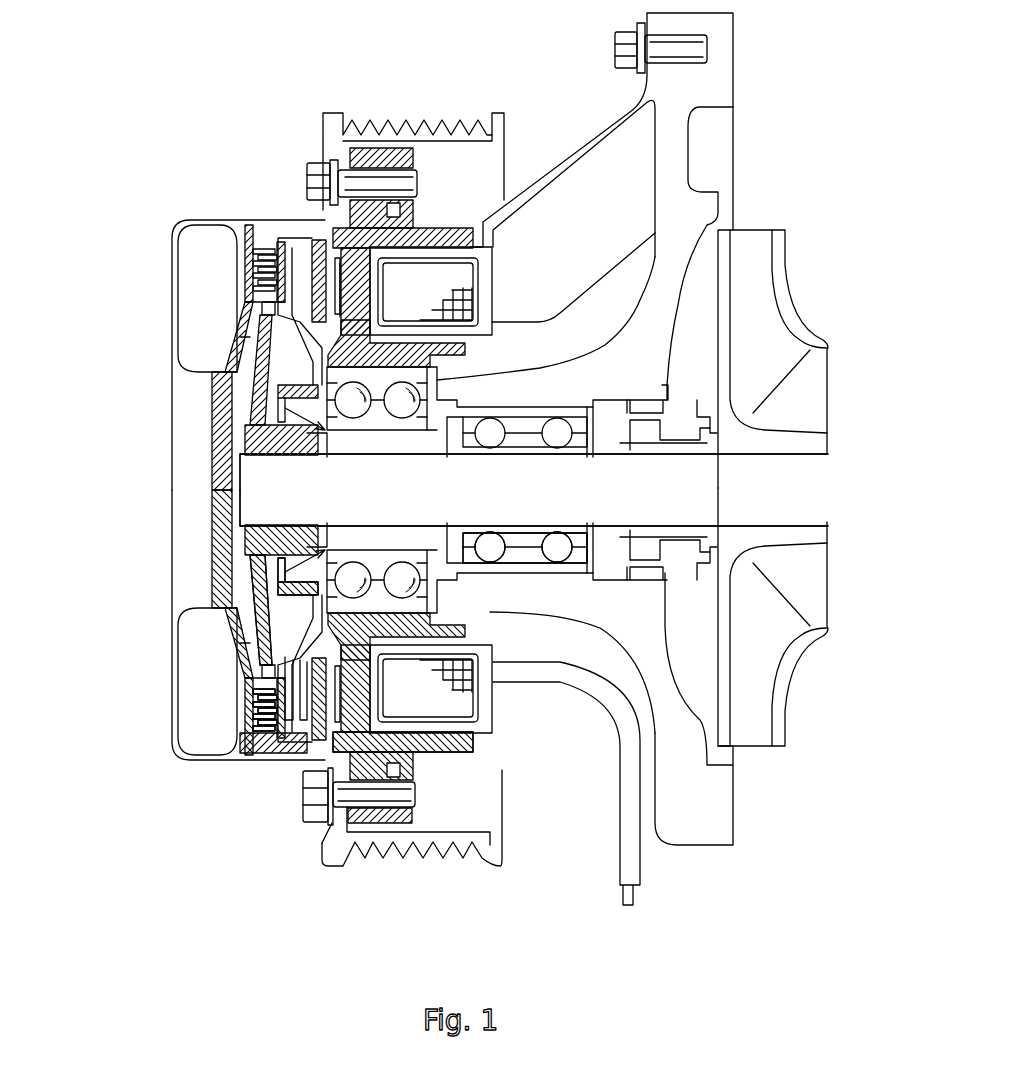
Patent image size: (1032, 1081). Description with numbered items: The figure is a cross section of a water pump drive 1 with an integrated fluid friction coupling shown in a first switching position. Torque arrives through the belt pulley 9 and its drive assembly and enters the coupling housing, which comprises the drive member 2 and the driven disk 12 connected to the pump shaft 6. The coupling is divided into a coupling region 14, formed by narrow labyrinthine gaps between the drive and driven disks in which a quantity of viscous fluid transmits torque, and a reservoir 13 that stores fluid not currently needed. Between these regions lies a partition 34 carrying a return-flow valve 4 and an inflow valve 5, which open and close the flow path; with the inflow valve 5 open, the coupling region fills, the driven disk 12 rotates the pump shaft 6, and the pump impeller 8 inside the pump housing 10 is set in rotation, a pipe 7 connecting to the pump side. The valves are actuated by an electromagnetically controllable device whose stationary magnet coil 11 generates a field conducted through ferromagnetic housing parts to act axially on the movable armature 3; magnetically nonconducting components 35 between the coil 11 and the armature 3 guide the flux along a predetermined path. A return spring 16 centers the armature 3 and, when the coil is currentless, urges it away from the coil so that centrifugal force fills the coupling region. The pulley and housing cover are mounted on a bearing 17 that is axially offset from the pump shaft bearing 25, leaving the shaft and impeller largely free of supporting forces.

The electromagnetic coil 1 is at (395, 258).
The drive member 2 is at (213, 418).
The armature 3 is at (262, 297).
The return-flow valve 4 is at (262, 252).
The inflow valve 5 is at (237, 740).
The pump shaft 6 is at (745, 502).
The water pipe 7 is at (630, 877).
The pump impeller 8 is at (745, 317).
The belt pulley 9 is at (338, 133).
The pump housing 10 is at (690, 108).
The magnet coil 11 is at (410, 700).
The driven disk 12 is at (283, 590).
The reservoir 13 is at (283, 627).
The coupling region 14 is at (253, 690).
The return spring 16 is at (300, 720).
The bearing 17 is at (265, 437).
The pump shaft bearing 25 is at (505, 528).
The partition 34 is at (270, 337).
The magnetically nonconducting components 35 is at (345, 285).